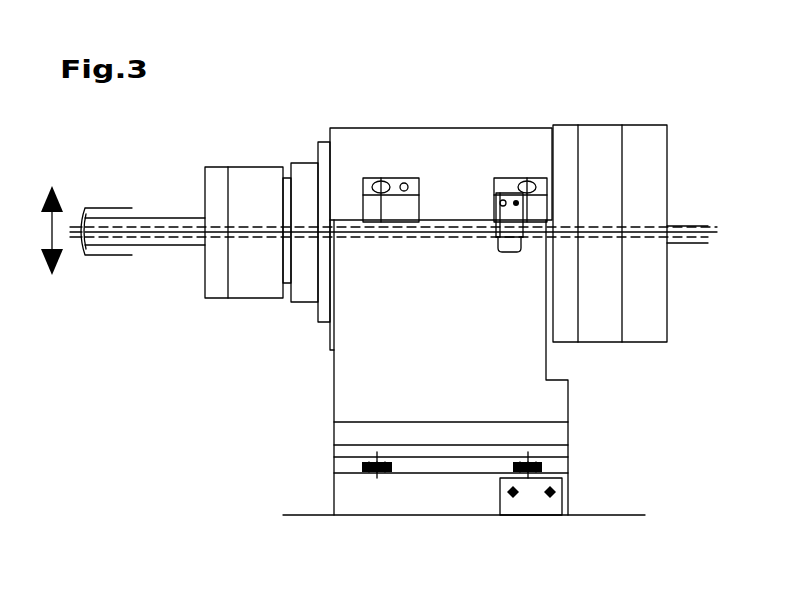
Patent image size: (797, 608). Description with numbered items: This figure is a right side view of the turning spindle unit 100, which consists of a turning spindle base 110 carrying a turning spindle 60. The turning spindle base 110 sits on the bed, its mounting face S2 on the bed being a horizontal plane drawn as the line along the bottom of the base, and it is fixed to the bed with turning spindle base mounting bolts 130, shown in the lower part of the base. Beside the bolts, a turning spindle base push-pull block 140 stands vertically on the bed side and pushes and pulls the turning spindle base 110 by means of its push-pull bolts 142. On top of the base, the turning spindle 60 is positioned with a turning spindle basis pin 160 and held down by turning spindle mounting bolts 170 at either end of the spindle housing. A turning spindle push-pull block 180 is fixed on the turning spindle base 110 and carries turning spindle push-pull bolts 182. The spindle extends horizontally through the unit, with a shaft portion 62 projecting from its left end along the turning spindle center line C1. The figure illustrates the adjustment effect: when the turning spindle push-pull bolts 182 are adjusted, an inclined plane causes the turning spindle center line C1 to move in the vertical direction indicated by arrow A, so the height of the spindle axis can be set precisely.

The turning spindle 60 is at (460, 160).
The coupling block 62 is at (246, 283).
The turning spindle unit 100 is at (743, 95).
The turning spindle base 110 is at (377, 373).
The turning spindle base mounting bolts 130 is at (395, 458).
The turning spindle base push-pull block 140 is at (548, 507).
The push-pull bolts 142 is at (550, 498).
The turning spindle basis pin 160 is at (404, 183).
The turning spindle mounting bolts 170 is at (379, 181).
The turning spindle push-pull block 180 is at (508, 223).
The turning spindle push-pull bolts 182 is at (516, 200).
The turning spindle center line C1 is at (248, 228).
The mounting face S2 is at (303, 513).
The arrow A is at (38, 230).